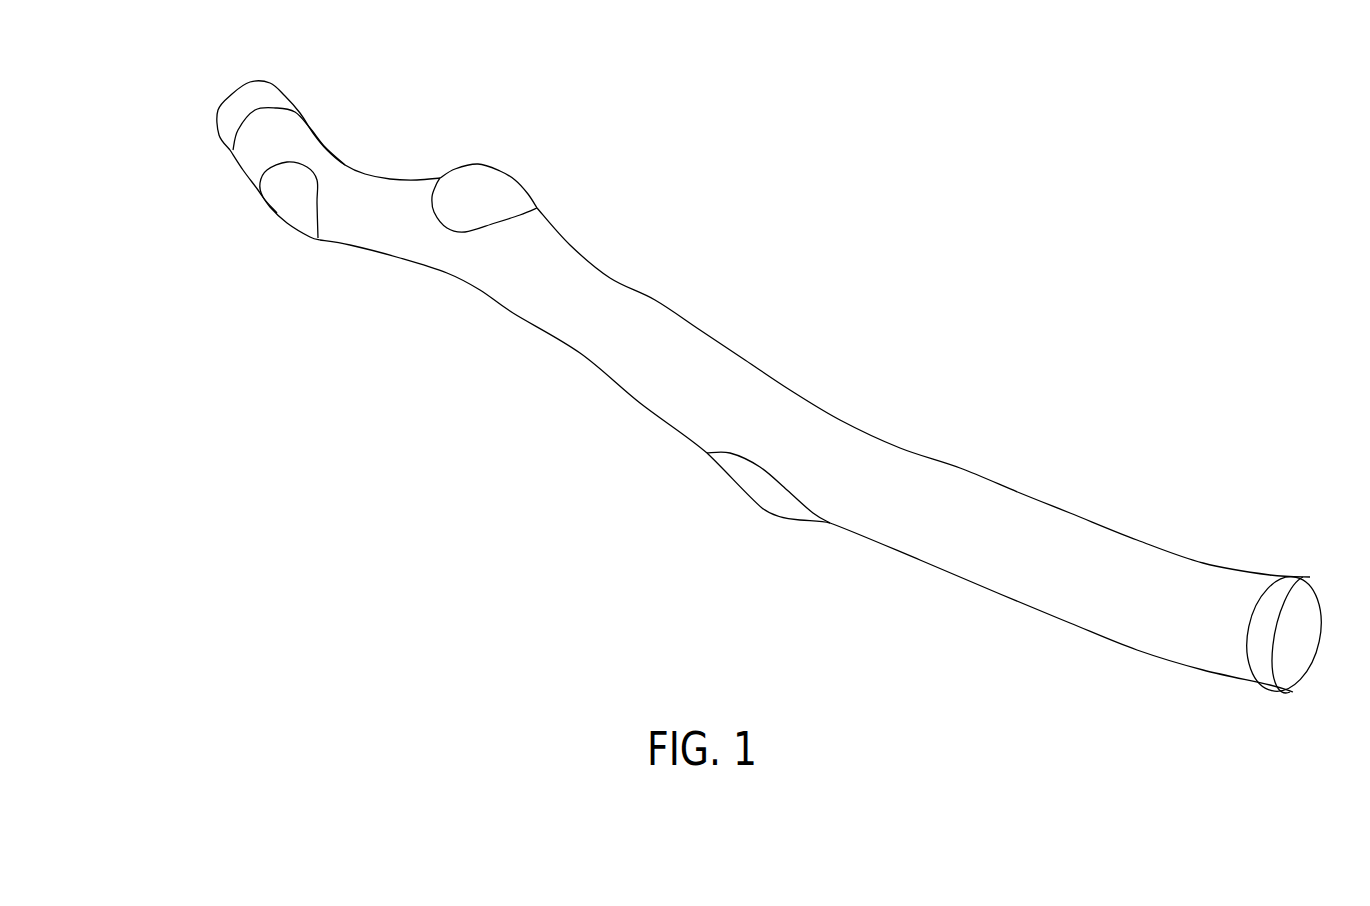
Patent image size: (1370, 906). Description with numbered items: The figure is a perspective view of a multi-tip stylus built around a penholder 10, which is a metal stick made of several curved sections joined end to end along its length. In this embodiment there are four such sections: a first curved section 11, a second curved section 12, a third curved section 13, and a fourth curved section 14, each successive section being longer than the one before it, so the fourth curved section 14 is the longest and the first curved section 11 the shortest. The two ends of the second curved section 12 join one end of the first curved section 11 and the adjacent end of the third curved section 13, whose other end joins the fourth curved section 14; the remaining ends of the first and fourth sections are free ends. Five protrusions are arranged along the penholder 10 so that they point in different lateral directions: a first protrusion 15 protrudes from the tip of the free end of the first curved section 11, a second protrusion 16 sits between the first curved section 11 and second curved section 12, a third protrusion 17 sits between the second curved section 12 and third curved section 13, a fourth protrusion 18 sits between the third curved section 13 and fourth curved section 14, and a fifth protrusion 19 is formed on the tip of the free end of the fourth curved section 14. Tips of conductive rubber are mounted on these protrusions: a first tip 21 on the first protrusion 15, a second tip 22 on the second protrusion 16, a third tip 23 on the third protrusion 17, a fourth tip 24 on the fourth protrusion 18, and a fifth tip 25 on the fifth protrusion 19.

The penholder 10 is at (662, 296).
The first curved section 11 is at (307, 132).
The second curved section 12 is at (412, 249).
The third curved section 13 is at (606, 352).
The fourth curved section 14 is at (993, 498).
The first protrusion 15 is at (228, 151).
The second protrusion 16 is at (310, 245).
The third protrusion 17 is at (543, 197).
The fourth protrusion 18 is at (786, 516).
The fifth protrusion 19 is at (1271, 690).
The first tip 21 is at (266, 95).
The second tip 22 is at (305, 207).
The third tip 23 is at (498, 177).
The fourth tip 24 is at (738, 483).
The fifth tip 25 is at (1280, 582).